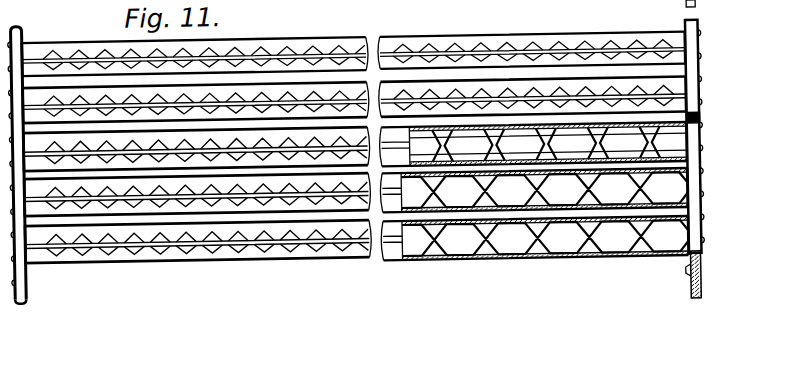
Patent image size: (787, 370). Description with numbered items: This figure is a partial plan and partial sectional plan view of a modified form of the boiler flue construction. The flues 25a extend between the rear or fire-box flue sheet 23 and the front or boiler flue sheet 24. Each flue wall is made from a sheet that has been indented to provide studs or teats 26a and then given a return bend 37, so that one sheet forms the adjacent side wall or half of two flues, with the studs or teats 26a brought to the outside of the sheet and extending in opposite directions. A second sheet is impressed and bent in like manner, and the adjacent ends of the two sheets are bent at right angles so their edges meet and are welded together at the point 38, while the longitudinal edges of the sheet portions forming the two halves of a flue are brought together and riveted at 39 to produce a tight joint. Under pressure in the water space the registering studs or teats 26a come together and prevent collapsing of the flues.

The rear or fire-box flue sheet 23 is at (19, 304).
The front or boiler flue sheet 24 is at (685, 32).
The flues 25a is at (173, 218).
The studs or teats 26a is at (680, 165).
The return bend 37 is at (25, 81).
The welded edges 38 is at (686, 222).
The riveted longitudinal edges 39 is at (277, 273).